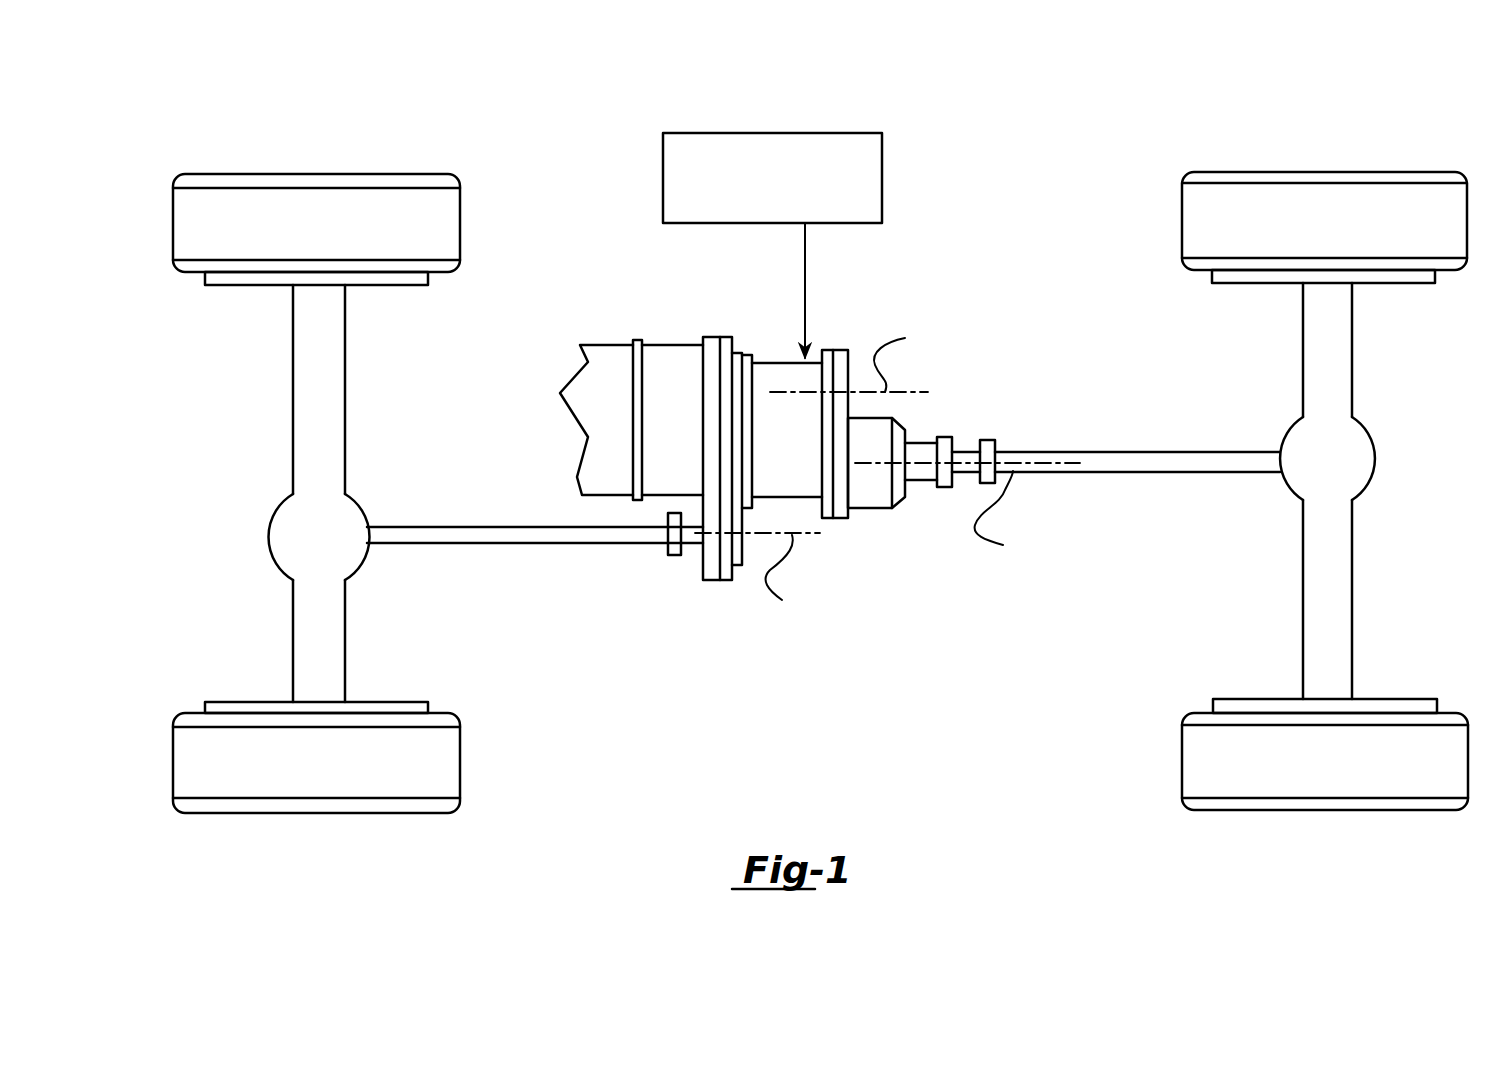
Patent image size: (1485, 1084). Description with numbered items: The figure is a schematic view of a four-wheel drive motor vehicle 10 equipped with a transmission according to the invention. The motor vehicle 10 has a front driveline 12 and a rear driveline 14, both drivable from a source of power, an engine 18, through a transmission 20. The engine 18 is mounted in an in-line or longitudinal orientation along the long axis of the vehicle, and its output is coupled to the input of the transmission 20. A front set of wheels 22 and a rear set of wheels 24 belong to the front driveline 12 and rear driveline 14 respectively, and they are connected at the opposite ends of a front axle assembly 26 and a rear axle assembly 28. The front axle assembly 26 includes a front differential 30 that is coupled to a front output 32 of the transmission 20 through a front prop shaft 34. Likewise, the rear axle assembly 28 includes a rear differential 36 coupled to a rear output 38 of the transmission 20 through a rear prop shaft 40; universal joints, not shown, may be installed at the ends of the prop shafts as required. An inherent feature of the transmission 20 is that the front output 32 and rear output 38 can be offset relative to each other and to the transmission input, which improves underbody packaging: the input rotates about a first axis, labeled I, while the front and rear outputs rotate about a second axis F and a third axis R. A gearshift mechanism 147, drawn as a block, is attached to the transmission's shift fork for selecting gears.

The motor vehicle 10 is at (1012, 176).
The front driveline 12 is at (350, 411).
The rear driveline 14 is at (1185, 404).
The engine 18 is at (590, 458).
The transmission 20 is at (677, 357).
The front set of wheels 22 is at (233, 213).
The rear set of wheels 24 is at (1240, 214).
The front axle assembly 26 is at (302, 378).
The rear axle assembly 28 is at (1337, 348).
The front differential 30 is at (283, 545).
The front output 32 is at (688, 542).
The front prop shaft 34 is at (543, 535).
The rear differential 36 is at (1353, 452).
The rear output 38 is at (963, 457).
The rear prop shaft 40 is at (1188, 462).
The gearshift mechanism 147 is at (885, 136).